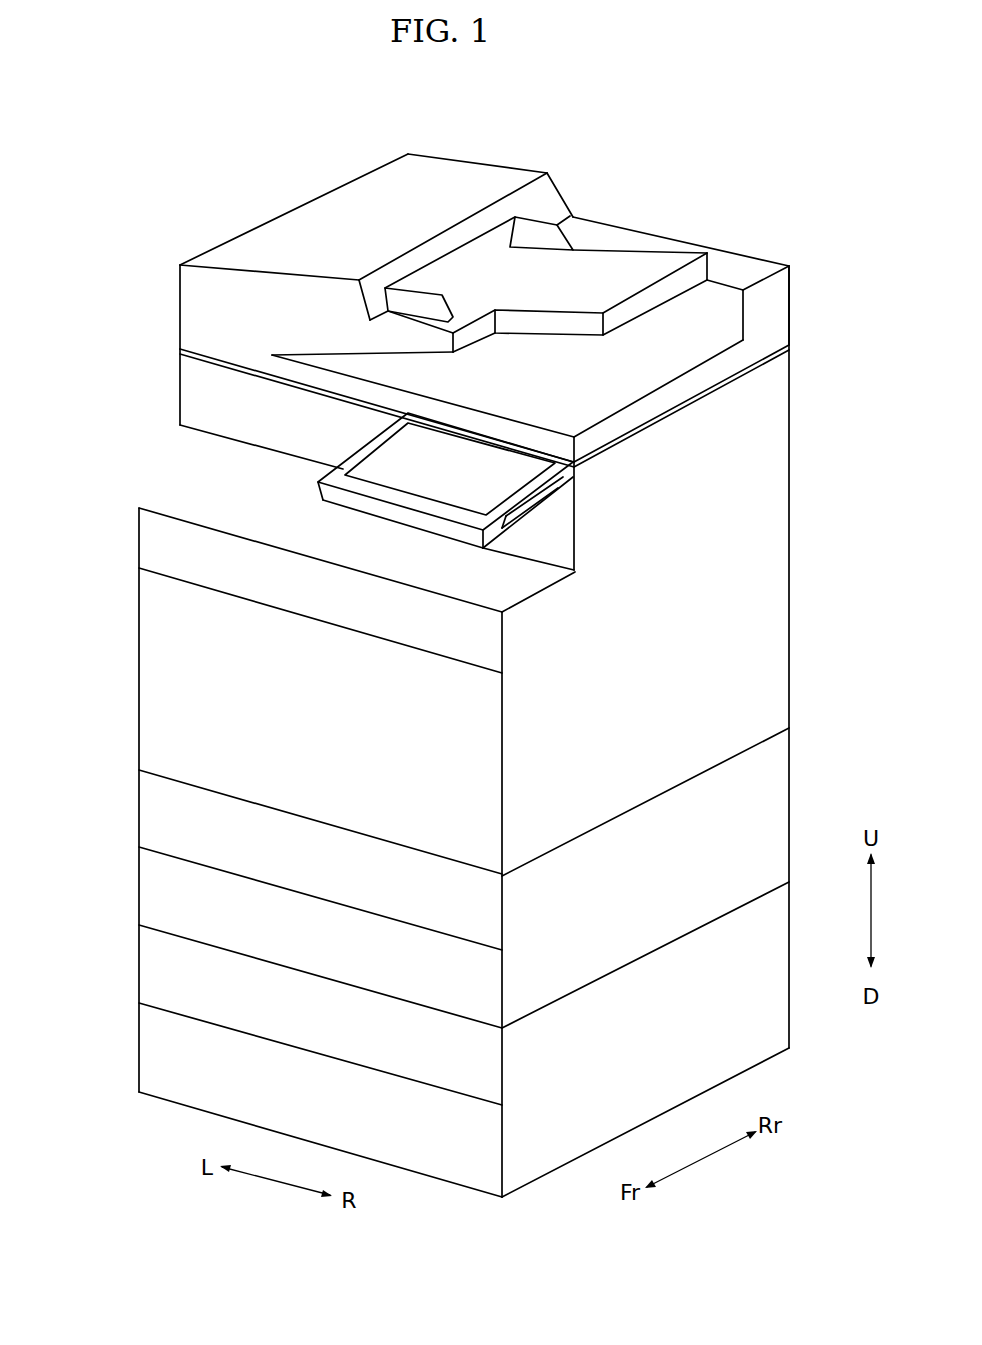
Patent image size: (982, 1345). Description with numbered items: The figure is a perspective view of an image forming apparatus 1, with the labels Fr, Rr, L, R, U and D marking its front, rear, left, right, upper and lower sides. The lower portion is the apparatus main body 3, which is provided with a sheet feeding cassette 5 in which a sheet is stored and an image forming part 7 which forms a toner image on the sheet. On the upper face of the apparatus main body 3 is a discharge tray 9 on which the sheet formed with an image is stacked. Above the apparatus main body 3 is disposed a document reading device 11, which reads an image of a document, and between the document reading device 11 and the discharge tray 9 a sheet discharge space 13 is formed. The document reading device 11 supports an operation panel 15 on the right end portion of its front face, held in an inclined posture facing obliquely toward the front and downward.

The image forming apparatus 1 is at (297, 186).
The apparatus main body 3 is at (136, 616).
The sheet feeding cassette 5 is at (133, 1043).
The image forming part 7 is at (713, 637).
The discharge tray 9 is at (220, 505).
The document reading device 11 is at (176, 307).
The sheet discharge space 13 is at (205, 445).
The operation panel 15 is at (557, 506).